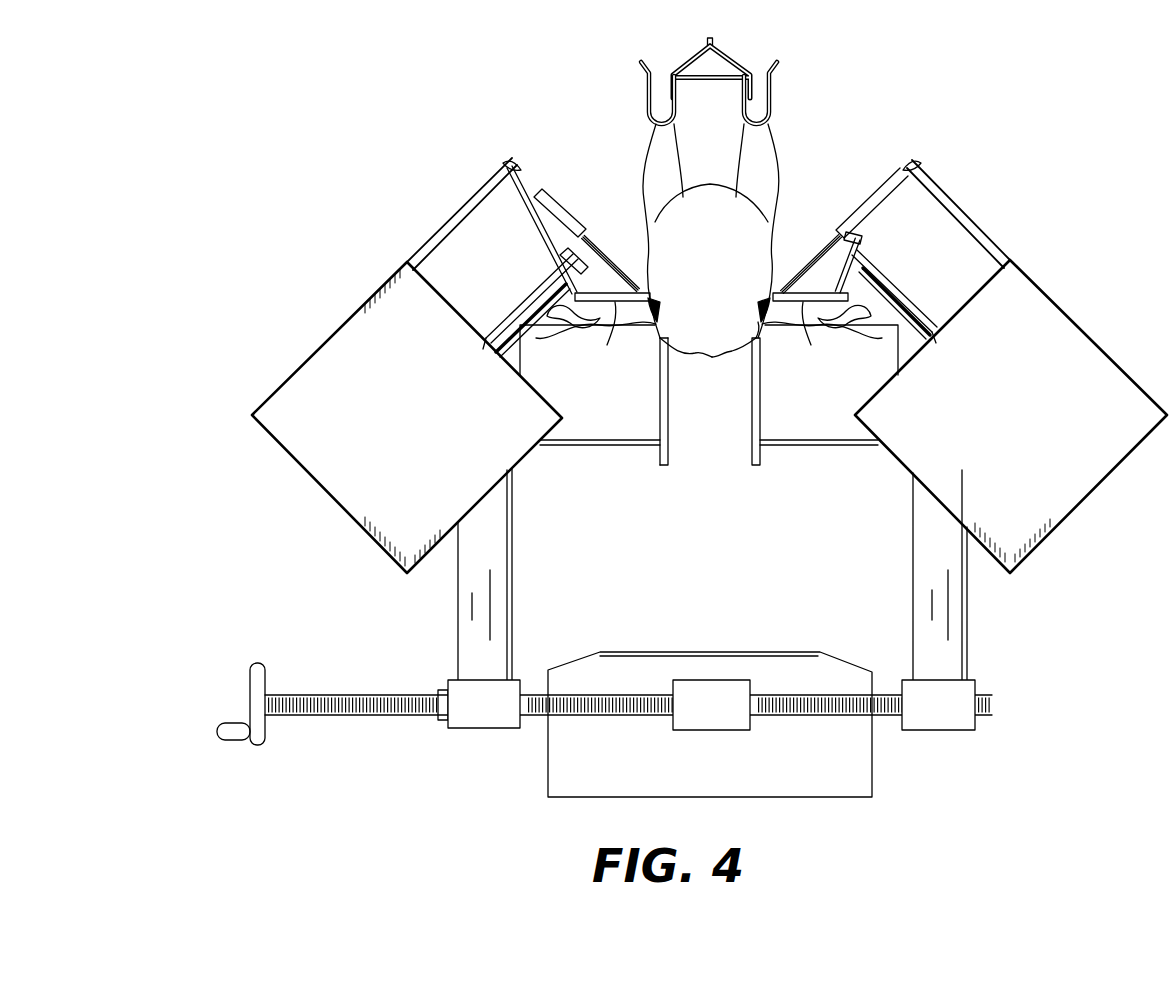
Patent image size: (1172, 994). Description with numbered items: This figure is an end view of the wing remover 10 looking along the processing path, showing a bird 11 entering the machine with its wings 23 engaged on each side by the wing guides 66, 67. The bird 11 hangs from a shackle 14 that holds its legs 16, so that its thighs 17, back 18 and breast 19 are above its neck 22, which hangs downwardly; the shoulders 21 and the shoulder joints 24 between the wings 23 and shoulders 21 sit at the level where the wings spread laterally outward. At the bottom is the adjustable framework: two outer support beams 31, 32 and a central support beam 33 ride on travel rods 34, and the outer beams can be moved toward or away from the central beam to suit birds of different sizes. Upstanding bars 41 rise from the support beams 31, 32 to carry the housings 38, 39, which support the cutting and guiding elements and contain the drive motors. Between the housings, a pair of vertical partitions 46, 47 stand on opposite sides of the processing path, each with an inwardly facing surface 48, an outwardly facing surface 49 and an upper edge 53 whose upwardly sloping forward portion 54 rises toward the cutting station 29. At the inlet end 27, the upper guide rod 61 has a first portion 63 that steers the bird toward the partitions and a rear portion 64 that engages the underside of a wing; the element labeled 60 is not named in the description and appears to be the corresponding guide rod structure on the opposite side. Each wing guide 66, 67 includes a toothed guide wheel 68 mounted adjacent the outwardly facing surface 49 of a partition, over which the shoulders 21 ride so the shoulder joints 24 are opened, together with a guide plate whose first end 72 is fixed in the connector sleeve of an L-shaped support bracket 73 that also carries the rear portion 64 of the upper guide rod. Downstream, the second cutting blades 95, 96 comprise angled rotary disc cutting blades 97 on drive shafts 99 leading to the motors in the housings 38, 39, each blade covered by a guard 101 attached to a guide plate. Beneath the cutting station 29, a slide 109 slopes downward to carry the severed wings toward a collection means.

The wing remover 10 is at (1002, 180).
The bird 11 is at (640, 182).
The shackle 14 is at (730, 58).
The legs 16 is at (762, 122).
The thighs 17 is at (778, 178).
The back 18 is at (726, 182).
The breast 19 is at (720, 285).
The shoulders 21 is at (745, 365).
The neck 22 is at (714, 360).
The wings 23 is at (818, 322).
The shoulder joints 24 is at (760, 326).
The inlet end 27 is at (692, 450).
The cutting station 29 is at (815, 188).
The support beam 31 is at (947, 713).
The support beam 32 is at (497, 713).
The central support beam 33 is at (725, 713).
The travel rods 34 is at (533, 735).
The housing 38 is at (1017, 470).
The housing 39 is at (416, 470).
The upstanding bars 41 is at (464, 640).
The partition 46 is at (762, 440).
The partition 47 is at (658, 440).
The inwardly facing surface 48 is at (667, 408).
The outwardly facing surface 49 is at (656, 398).
The upper edge 53 is at (775, 345).
The upwardly sloping forward portion 54 is at (658, 344).
The right gripping assembly 60 is at (886, 262).
The upper guide rod 61 is at (532, 268).
The first portions 63 is at (567, 326).
The rear portions 64 is at (538, 192).
The wing guide 66 is at (612, 316).
The wing guide 67 is at (606, 292).
The guide wheel 68 is at (650, 310).
The first end of guide plate 72 is at (530, 192).
The support bracket 73 is at (506, 360).
The second cutting blade 95 is at (912, 155).
The second cutting blade 96 is at (508, 153).
The rotary disc cutting blade 97 is at (600, 254).
The drive shaft 99 is at (486, 320).
The guard 101 is at (472, 166).
The slide 109 is at (638, 662).